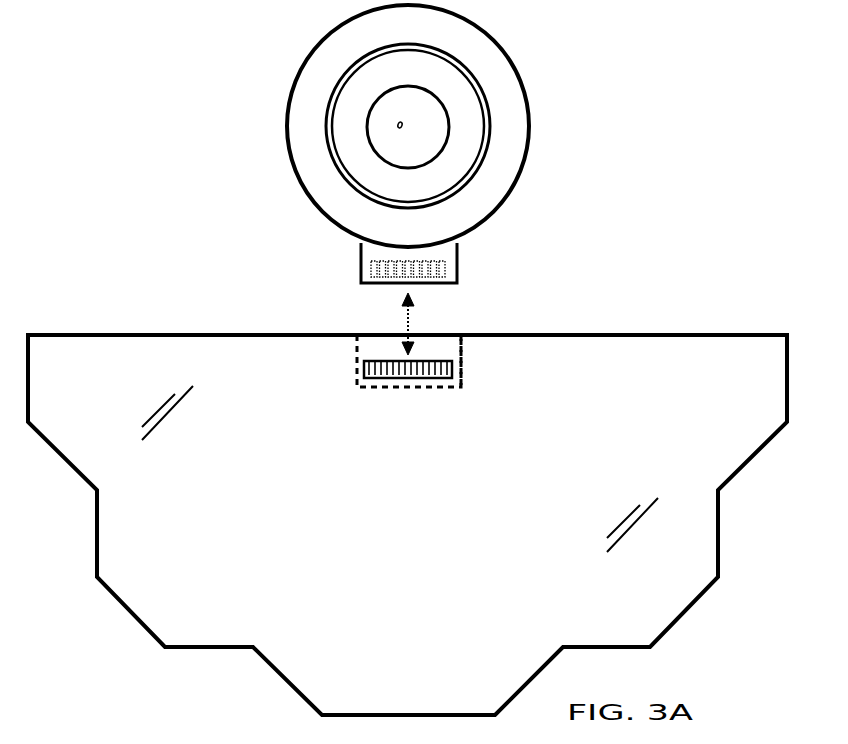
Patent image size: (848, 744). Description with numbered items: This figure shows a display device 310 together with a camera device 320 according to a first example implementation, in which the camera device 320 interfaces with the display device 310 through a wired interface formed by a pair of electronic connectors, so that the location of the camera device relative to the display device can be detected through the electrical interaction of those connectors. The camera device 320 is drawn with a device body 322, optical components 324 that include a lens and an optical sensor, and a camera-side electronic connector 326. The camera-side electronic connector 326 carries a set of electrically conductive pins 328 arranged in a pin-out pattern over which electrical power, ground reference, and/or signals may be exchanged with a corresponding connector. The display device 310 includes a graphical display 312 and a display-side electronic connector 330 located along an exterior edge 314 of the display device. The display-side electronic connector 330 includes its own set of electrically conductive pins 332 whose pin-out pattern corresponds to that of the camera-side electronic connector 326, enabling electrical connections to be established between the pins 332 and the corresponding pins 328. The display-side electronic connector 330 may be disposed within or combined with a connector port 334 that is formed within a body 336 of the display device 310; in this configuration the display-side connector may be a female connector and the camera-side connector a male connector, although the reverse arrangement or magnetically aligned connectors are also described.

The display device 310 is at (133, 335).
The graphical display 312 is at (212, 640).
The exterior edge 314 is at (703, 335).
The camera device 320 is at (518, 77).
The device body 322 is at (518, 122).
The optical components 324 is at (387, 104).
The camera-side electronic connector 326 is at (452, 277).
The electrically conductive pins 328 is at (371, 268).
The display-side electronic connector 330 is at (442, 378).
The electrically conductive pins 332 is at (372, 370).
The connector port 334 is at (375, 345).
The body 336 is at (462, 352).